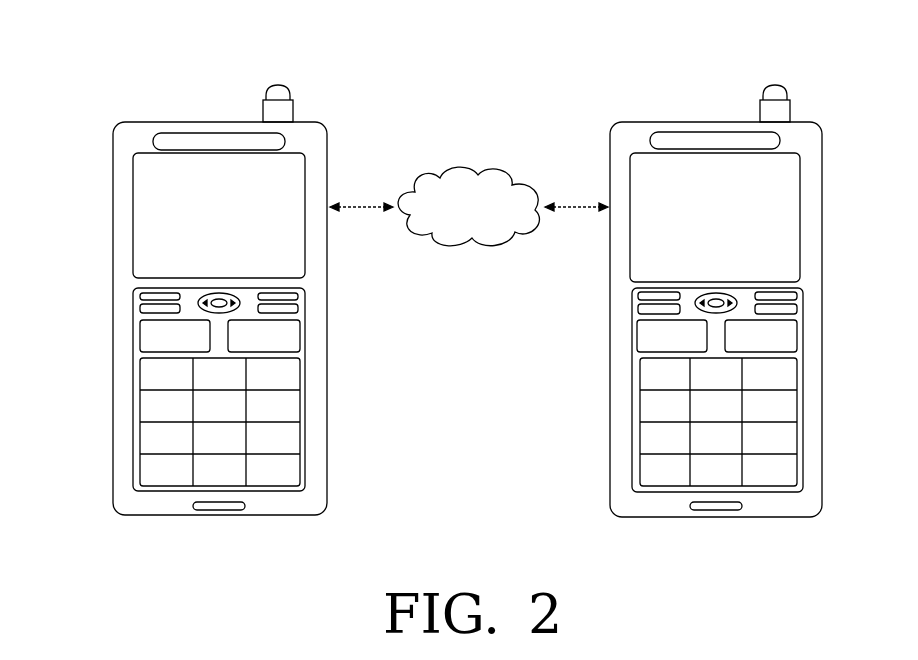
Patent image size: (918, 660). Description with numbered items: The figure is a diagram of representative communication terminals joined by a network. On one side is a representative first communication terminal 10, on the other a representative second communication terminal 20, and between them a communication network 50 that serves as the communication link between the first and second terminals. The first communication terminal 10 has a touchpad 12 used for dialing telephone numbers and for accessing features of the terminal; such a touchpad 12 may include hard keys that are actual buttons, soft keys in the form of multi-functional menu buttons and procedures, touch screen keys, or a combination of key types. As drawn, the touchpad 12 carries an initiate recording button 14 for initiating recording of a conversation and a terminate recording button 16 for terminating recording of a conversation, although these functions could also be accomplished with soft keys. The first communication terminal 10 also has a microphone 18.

The first communication terminal 10 is at (213, 311).
The touchpad 12 is at (213, 398).
The initiate recording button 14 is at (130, 333).
The terminate recording button 16 is at (299, 337).
The microphone 18 is at (216, 510).
The second communication terminal 20 is at (668, 122).
The communication network 50 is at (445, 175).